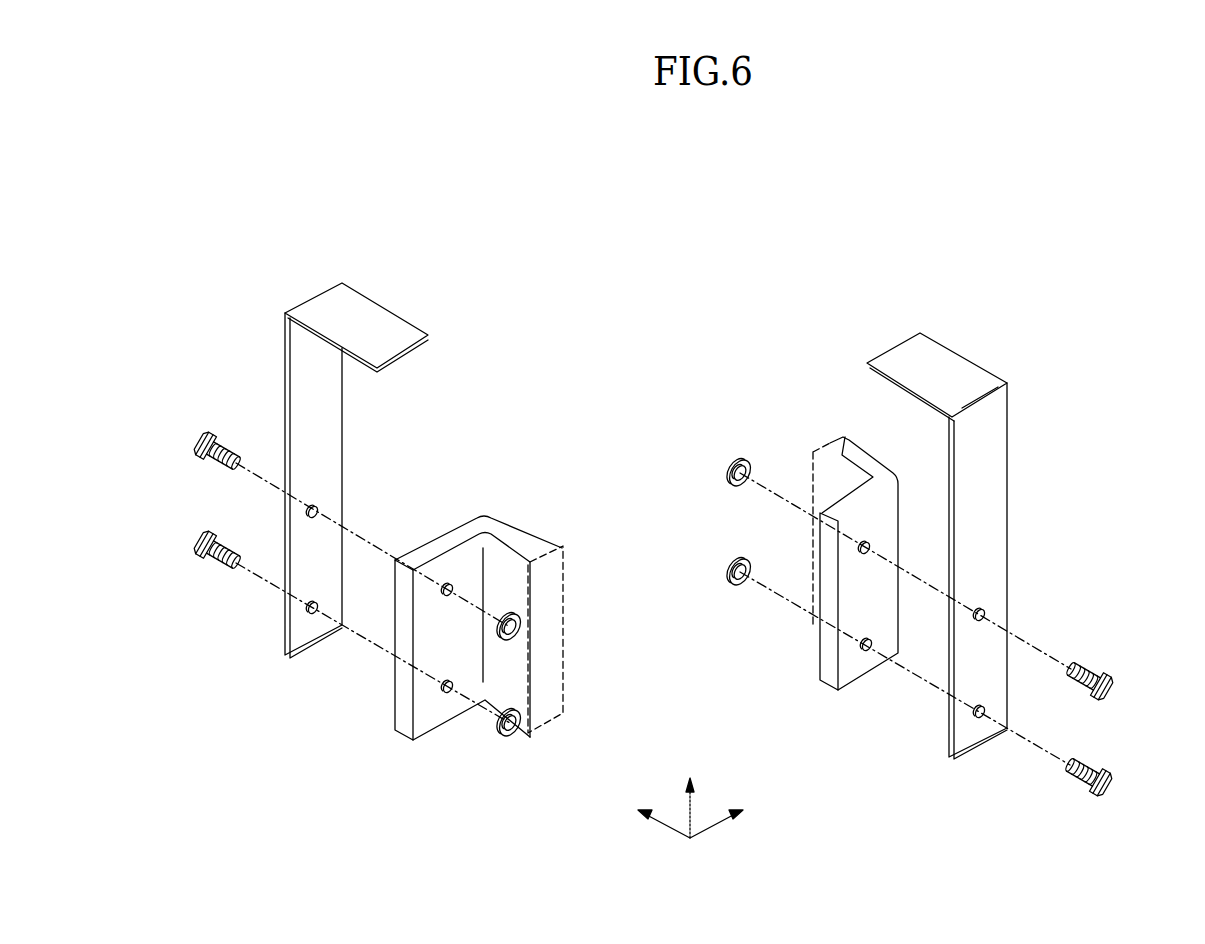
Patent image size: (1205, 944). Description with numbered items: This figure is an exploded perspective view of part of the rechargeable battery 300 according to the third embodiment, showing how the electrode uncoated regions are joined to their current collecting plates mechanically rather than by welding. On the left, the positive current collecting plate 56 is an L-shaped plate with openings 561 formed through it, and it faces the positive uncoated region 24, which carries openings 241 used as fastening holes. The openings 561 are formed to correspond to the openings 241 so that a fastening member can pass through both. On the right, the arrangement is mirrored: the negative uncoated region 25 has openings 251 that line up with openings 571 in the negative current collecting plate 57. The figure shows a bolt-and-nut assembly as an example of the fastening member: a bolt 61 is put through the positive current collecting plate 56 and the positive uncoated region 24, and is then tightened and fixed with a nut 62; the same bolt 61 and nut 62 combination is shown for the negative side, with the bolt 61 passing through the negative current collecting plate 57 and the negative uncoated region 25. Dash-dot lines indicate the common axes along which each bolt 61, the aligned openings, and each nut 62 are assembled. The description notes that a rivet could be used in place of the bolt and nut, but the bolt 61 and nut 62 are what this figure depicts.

The rechargeable battery 300 is at (739, 212).
The positive current collecting plate 56 is at (302, 367).
The opening of positive current collecting plate 561 is at (320, 510).
The bolt 61 is at (192, 540).
The nut 62 is at (520, 628).
The positive uncoated region 24 is at (508, 532).
The opening of positive uncoated region 241 is at (450, 695).
The negative uncoated region 25 is at (845, 660).
The opening of negative uncoated region 251 is at (862, 540).
The negative current collecting plate 57 is at (995, 470).
The opening of negative current collecting plate 571 is at (987, 613).